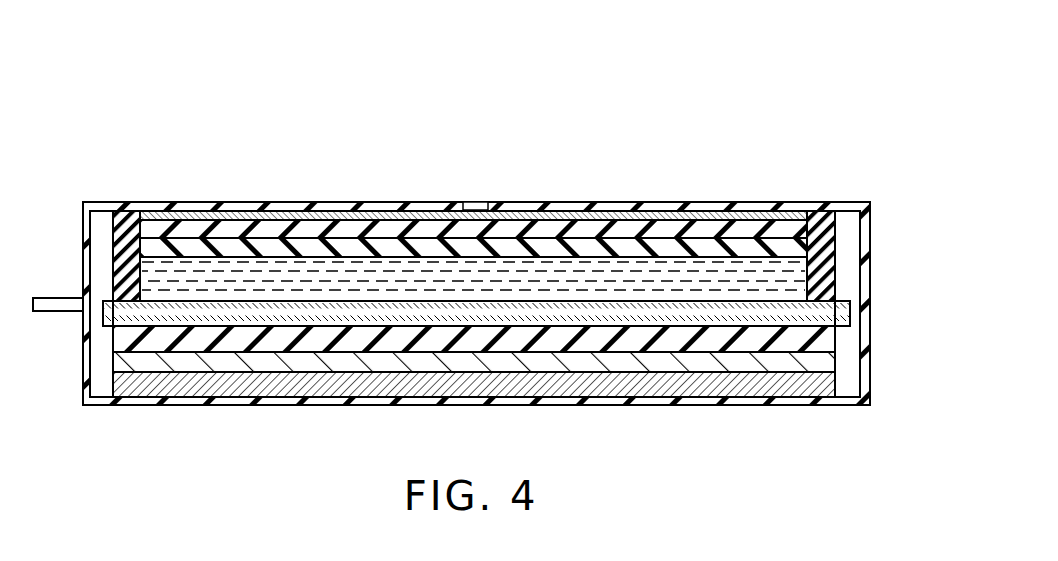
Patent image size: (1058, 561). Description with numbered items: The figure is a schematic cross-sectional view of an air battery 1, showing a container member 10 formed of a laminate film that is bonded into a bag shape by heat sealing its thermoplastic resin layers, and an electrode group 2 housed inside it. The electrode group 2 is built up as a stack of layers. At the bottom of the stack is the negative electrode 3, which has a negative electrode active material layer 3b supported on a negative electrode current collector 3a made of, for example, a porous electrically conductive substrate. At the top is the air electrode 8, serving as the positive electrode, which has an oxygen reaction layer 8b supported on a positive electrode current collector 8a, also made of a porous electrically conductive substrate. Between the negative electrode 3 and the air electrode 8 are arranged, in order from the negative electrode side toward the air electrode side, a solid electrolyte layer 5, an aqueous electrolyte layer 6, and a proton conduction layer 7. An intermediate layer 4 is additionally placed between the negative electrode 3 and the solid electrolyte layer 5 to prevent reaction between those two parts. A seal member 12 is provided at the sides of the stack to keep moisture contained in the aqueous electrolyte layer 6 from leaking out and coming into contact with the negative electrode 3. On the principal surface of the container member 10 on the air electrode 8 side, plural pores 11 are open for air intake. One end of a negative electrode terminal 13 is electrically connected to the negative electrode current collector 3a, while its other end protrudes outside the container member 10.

The air battery 1 is at (237, 113).
The electrode group 2 is at (107, 298).
The negative electrode 3 is at (537, 372).
The negative electrode current collector 3a is at (830, 386).
The negative electrode active material layer 3b is at (830, 362).
The intermediate layer 4 is at (830, 338).
The solid electrolyte layer 5 is at (836, 308).
The aqueous electrolyte layer 6 is at (547, 272).
The proton conduction layer 7 is at (594, 248).
The air electrode 8 is at (473, 168).
The positive electrode current collector 8a is at (683, 216).
The oxygen reaction layer 8b is at (657, 142).
The container member 10 is at (863, 223).
The pores 11 is at (478, 206).
The seal member 12 is at (132, 214).
The negative electrode terminal 13 is at (57, 304).